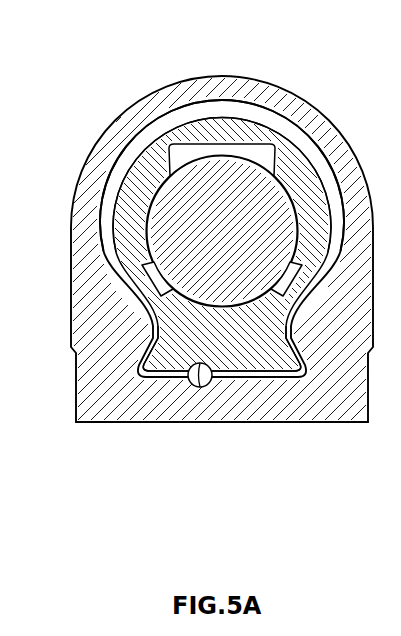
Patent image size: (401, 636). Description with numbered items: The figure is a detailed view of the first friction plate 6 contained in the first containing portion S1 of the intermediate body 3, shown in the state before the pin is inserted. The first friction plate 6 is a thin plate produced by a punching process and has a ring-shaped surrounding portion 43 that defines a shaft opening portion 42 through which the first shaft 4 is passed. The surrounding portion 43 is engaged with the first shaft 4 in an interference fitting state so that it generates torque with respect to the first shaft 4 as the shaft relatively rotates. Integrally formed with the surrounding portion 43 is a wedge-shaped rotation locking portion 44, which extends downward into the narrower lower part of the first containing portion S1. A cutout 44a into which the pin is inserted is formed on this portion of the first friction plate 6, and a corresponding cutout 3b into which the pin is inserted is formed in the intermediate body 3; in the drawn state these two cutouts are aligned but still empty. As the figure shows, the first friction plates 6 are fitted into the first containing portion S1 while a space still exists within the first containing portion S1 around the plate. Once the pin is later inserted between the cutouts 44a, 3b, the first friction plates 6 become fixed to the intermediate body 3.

The intermediate body 3 is at (268, 76).
The cutout 3b is at (212, 383).
The first shaft 4 is at (279, 204).
The first friction plate 6 is at (200, 113).
The shaft opening portion 42 is at (137, 207).
The surrounding portion 43 is at (130, 248).
The rotation locking portion 44 is at (161, 350).
The cutout 44a is at (166, 374).
The first containing portion S1 is at (283, 124).